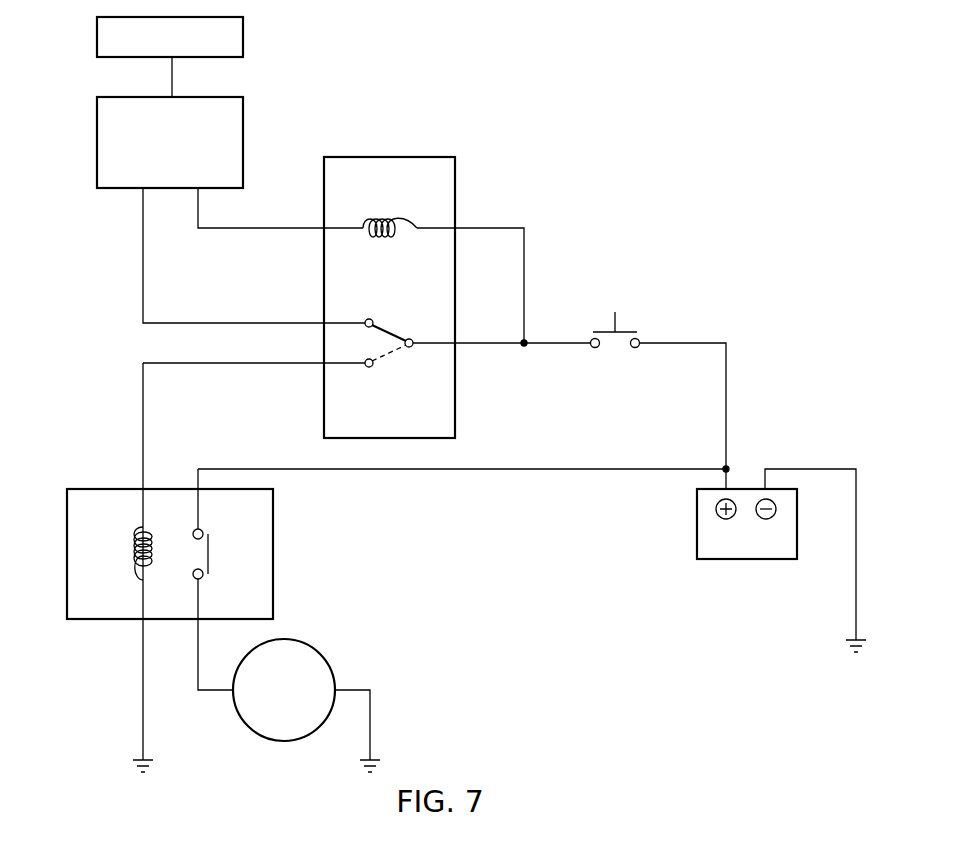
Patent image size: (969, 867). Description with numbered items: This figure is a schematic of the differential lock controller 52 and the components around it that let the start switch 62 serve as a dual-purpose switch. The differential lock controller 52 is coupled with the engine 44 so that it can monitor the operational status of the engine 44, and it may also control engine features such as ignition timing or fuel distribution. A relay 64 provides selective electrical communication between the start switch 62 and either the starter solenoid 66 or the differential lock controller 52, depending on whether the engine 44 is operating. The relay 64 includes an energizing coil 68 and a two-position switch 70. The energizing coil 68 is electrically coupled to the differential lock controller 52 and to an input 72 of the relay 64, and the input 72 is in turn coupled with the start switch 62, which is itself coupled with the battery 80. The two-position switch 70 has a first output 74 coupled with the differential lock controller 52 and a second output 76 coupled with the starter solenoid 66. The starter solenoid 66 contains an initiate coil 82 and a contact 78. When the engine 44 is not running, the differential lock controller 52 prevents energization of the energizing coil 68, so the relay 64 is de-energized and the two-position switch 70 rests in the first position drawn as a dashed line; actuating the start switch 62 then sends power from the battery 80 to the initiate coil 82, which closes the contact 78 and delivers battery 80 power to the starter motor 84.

The engine 44 is at (96, 35).
The differential lock controller 52 is at (96, 140).
The start switch 62 is at (616, 302).
The relay 64 is at (364, 150).
The starter solenoid 66 is at (108, 621).
The energizing coil 68 is at (378, 214).
The two-position switch 70 is at (396, 372).
The input 72 is at (411, 338).
The first output 74 is at (367, 318).
The second output 76 is at (368, 372).
The contact 78 is at (210, 560).
The battery 80 is at (745, 560).
The initiate coil 82 is at (133, 562).
The starter motor 84 is at (284, 742).